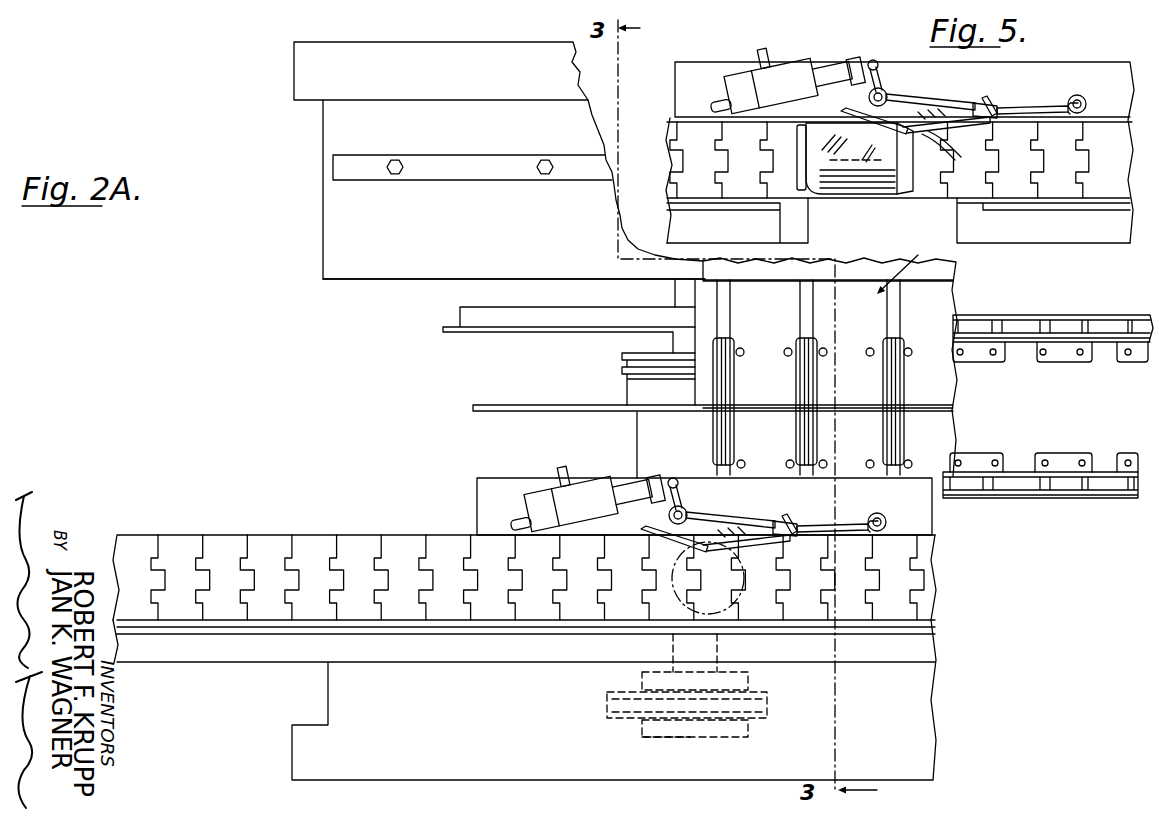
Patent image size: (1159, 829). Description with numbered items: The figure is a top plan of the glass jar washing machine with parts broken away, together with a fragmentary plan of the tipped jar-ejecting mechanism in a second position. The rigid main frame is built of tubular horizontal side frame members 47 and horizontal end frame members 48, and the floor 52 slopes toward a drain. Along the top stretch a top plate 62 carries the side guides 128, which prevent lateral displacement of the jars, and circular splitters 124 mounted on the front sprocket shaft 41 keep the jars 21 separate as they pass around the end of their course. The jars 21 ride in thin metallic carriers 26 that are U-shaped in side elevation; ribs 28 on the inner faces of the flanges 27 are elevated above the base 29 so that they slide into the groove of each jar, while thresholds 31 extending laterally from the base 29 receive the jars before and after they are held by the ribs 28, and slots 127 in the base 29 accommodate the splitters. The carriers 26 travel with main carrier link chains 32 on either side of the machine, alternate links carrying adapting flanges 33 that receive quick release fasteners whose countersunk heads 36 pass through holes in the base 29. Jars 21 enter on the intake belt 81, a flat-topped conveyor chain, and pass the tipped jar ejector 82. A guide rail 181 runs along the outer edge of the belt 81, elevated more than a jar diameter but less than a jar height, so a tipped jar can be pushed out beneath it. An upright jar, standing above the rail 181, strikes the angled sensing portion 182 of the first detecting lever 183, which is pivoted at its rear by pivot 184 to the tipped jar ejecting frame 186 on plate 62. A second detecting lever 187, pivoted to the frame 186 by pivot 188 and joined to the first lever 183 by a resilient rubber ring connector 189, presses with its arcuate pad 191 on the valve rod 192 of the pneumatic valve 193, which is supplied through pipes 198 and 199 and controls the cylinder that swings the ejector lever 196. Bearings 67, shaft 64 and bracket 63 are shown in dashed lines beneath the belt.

In FIG. 2A, the horizontal side frame member 47 is at (503, 75).
In FIG. 2A, the top plate 62 is at (525, 245).
In FIG. 2A, the horizontal end frame member 48 is at (338, 361).
In FIG. 2A, the front sprocket shaft 41 is at (676, 291).
In FIG. 2A, the circular splitter 124 is at (482, 406).
In FIG. 2A, the floor 52 is at (431, 456).
In FIG. 2A, the side guide 128 is at (955, 275).
In FIG. 2A, the carrier 26 is at (906, 267).
In FIG. 2A, the threshold 31 is at (772, 311).
In FIG. 2A, the base 29 is at (777, 375).
In FIG. 2A, the flange 27 is at (895, 340).
In FIG. 2A, the rib 28 is at (818, 378).
In FIG. 2A, the countersunk head 36 is at (786, 349).
In FIG. 2A, the slot 127 is at (743, 408).
In FIG. 2A, the main carrier link chain 32 is at (1058, 318).
In FIG. 2A, the adapting flange 33 is at (1040, 358).
In FIG. 2A, the tipped jar ejector 82 is at (626, 472).
In FIG. 2A, the intake belt 81 is at (453, 592).
In FIG. 5, the intake belt 81 is at (1077, 183).
In FIG. 2A, the guide rail 181 is at (846, 636).
In FIG. 5, the guide rail 181 is at (730, 233).
In FIG. 2A, the glass jar 21 is at (738, 610).
In FIG. 5, the glass jar 21 is at (870, 178).
In FIG. 2A, the bearing 67 is at (742, 682).
In FIG. 2A, the shaft 64 is at (768, 701).
In FIG. 2A, the bracket 63 is at (670, 738).
In FIG. 2A, the pneumatic valve 193 is at (574, 489).
In FIG. 5, the pneumatic valve 193 is at (789, 78).
In FIG. 2A, the pipe 198 is at (561, 463).
In FIG. 5, the pipe 198 is at (766, 50).
In FIG. 2A, the pipe 199 is at (509, 513).
In FIG. 5, the pipe 199 is at (716, 100).
In FIG. 2A, the valve rod 192 is at (638, 480).
In FIG. 5, the valve rod 192 is at (833, 72).
In FIG. 2A, the arcuate pad 191 is at (689, 482).
In FIG. 5, the arcuate pad 191 is at (866, 60).
In FIG. 2A, the pivot 188 is at (702, 504).
In FIG. 5, the pivot 188 is at (890, 92).
In FIG. 2A, the second detecting lever 187 is at (741, 514).
In FIG. 5, the second detecting lever 187 is at (937, 97).
In FIG. 2A, the resilient connector 189 is at (802, 512).
In FIG. 5, the resilient connector 189 is at (1003, 88).
In FIG. 2A, the first detecting lever 183 is at (832, 516).
In FIG. 5, the first detecting lever 183 is at (1045, 108).
In FIG. 2A, the tipped jar ejecting frame 186 is at (876, 504).
In FIG. 5, the tipped jar ejecting frame 186 is at (1088, 78).
In FIG. 2A, the pivot 184 is at (896, 512).
In FIG. 5, the pivot 184 is at (1082, 98).
In FIG. 2A, the sensing portion 182 is at (710, 528).
In FIG. 5, the sensing portion 182 is at (863, 110).
In FIG. 5, the ejector lever 196 is at (921, 152).